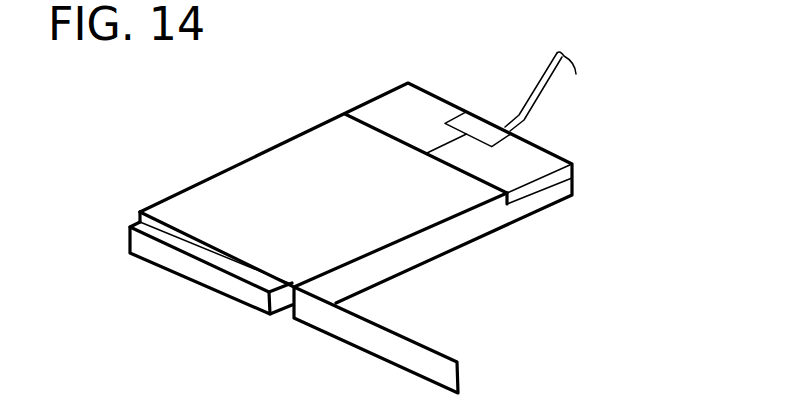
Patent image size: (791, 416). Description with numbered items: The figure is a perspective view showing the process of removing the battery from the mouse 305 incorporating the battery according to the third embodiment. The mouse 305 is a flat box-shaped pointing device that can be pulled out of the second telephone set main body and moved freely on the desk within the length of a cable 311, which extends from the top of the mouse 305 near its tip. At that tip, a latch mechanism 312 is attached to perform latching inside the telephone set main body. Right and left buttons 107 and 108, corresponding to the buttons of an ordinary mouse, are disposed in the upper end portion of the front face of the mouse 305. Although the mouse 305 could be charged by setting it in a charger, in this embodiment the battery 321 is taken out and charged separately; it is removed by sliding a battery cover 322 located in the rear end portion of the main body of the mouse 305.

The right button 107 is at (540, 151).
The left button 108 is at (383, 105).
The mouse incorporating the battery 305 is at (412, 257).
The cable 311 is at (556, 80).
The latch mechanism 312 is at (483, 128).
The battery 321 is at (200, 275).
The battery cover 322 is at (367, 337).